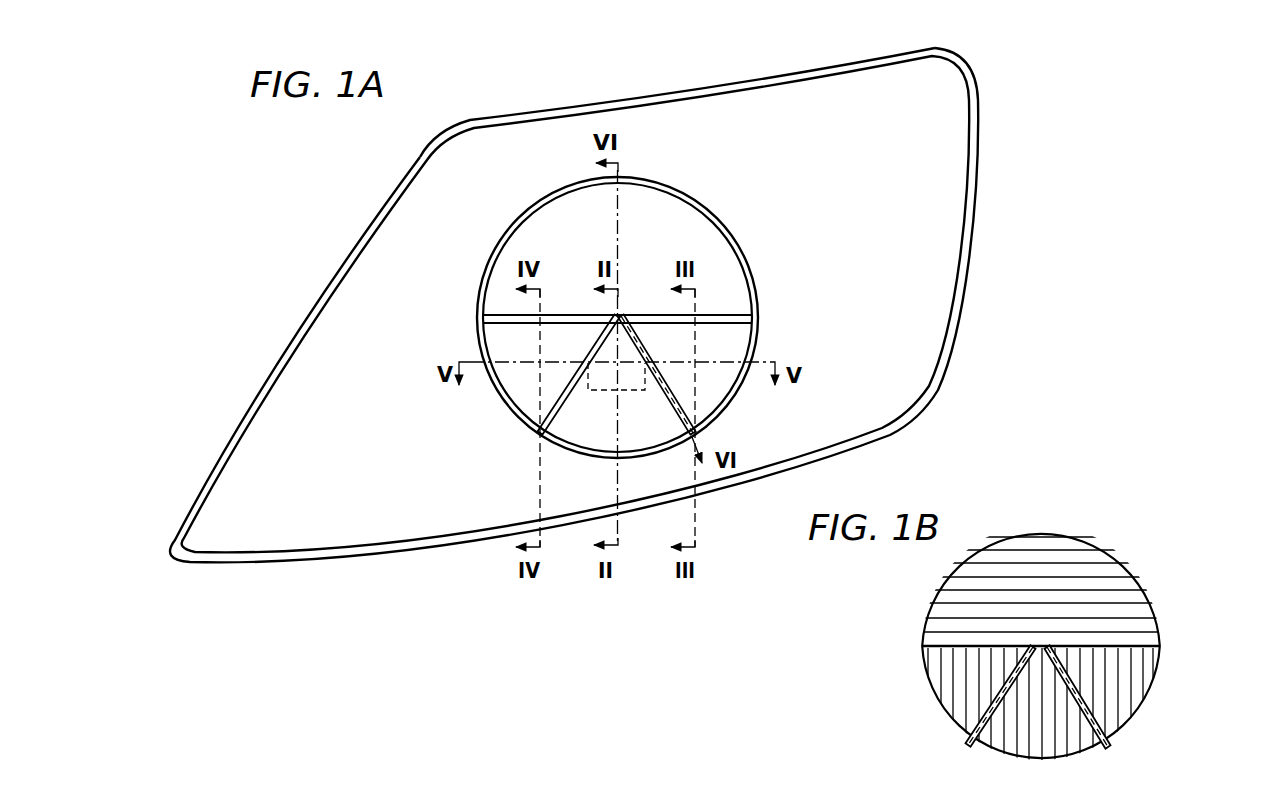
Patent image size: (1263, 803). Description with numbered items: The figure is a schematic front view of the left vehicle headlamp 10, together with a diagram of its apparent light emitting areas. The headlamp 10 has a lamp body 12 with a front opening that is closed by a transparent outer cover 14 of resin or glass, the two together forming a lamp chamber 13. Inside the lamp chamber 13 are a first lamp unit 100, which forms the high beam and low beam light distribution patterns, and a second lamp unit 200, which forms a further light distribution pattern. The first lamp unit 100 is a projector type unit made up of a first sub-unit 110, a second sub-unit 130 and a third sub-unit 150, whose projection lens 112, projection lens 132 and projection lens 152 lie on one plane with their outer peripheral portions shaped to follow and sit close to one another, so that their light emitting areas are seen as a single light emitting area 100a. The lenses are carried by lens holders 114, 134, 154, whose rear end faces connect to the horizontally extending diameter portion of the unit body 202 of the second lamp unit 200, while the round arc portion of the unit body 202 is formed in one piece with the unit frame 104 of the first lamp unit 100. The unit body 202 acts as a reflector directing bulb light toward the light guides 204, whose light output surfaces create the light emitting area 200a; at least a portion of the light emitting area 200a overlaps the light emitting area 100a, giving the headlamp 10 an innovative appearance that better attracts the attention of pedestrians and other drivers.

In FIG. 1A, the vehicle headlamp 10 is at (623, 628).
In FIG. 1A, the lamp body 12 is at (972, 270).
In FIG. 1A, the lamp chamber 13 is at (947, 95).
In FIG. 1A, the outer cover 14 is at (953, 318).
In FIG. 1A, the first lamp unit 100 is at (785, 345).
In FIG. 1A, the unit frame 104 is at (493, 386).
In FIG. 1A, the first sub-unit 110 is at (587, 451).
In FIG. 1A, the projection lens 112 is at (624, 453).
In FIG. 1A, the lens holder 114 is at (653, 315).
In FIG. 1A, the second sub-unit 130 is at (725, 401).
In FIG. 1A, the projection lens 132 is at (752, 343).
In FIG. 1A, the lens holder 134 is at (728, 315).
In FIG. 1A, the third sub-unit 150 is at (506, 403).
In FIG. 1A, the projection lens 152 is at (537, 433).
In FIG. 1A, the lens holder 154 is at (573, 315).
In FIG. 1A, the second lamp unit 200 is at (757, 229).
In FIG. 1A, the unit body 202 is at (703, 203).
In FIG. 1A, the light guides 204 is at (575, 396).
In FIG. 1B, the light emitting area 200a is at (1145, 582).
In FIG. 1B, the light emitting area 100a is at (1148, 693).